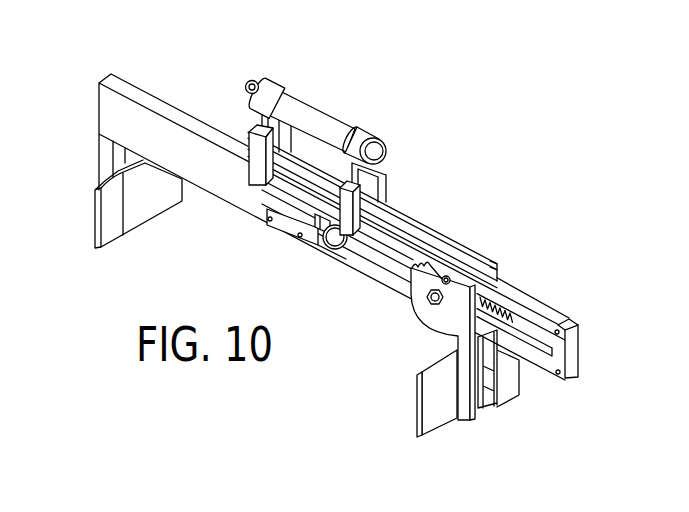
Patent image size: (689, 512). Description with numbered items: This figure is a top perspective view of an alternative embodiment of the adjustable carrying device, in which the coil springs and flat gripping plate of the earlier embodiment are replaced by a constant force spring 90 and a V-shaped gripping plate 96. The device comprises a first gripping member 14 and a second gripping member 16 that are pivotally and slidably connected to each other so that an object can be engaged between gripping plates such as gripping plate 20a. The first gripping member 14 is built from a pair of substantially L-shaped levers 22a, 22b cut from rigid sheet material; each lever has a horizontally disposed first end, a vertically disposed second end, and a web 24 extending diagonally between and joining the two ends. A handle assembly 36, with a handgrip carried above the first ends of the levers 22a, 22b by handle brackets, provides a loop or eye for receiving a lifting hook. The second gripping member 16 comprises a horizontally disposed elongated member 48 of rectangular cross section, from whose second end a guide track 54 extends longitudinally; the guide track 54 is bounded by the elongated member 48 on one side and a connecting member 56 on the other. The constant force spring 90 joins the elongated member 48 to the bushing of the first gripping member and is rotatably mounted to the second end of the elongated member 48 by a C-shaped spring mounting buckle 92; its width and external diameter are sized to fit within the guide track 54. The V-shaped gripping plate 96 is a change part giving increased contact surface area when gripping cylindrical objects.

The first gripping member 14 is at (403, 208).
The second gripping member 16 is at (142, 88).
The gripping plate 20a is at (420, 437).
The L-shaped lever 22a is at (476, 420).
The L-shaped lever 22b is at (448, 244).
The web 24 is at (427, 326).
The handle assembly 36 is at (332, 102).
The elongated member 48 is at (232, 204).
The guide track 54 is at (531, 332).
The connecting member 56 is at (582, 346).
The constant force spring 90 is at (341, 248).
The spring mounting buckle 92 is at (320, 232).
The V-shaped gripping plate 96 is at (93, 245).